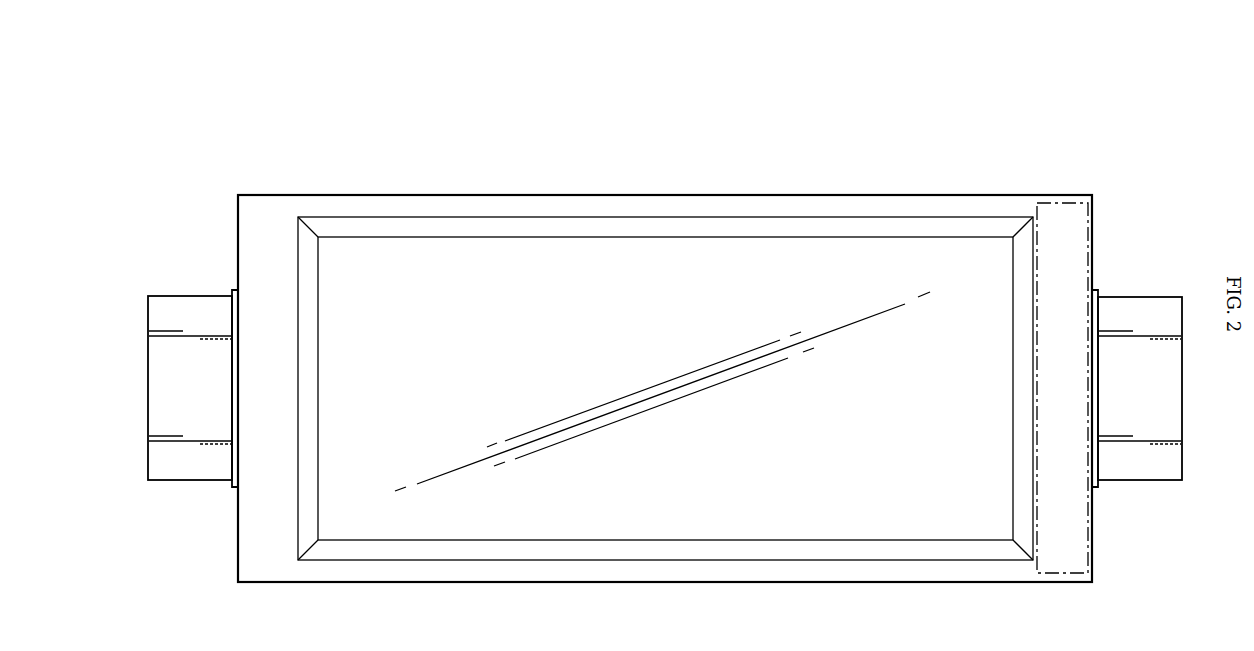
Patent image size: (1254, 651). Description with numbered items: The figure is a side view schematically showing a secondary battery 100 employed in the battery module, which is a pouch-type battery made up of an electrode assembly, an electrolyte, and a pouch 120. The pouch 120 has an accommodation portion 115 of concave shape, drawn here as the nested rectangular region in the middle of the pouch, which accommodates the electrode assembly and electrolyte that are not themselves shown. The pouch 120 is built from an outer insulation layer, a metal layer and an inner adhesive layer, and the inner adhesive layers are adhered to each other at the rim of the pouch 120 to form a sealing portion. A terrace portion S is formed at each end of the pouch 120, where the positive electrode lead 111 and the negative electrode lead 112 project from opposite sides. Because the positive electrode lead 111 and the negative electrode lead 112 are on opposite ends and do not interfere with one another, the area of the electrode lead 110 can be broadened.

The secondary battery 100 is at (665, 309).
The electrode lead 110 is at (977, 36).
The positive electrode lead 111 is at (177, 296).
The negative electrode lead 112 is at (1149, 297).
The accommodation portion 115 is at (510, 278).
The pouch 120 is at (274, 194).
The terrace portion S is at (1061, 201).